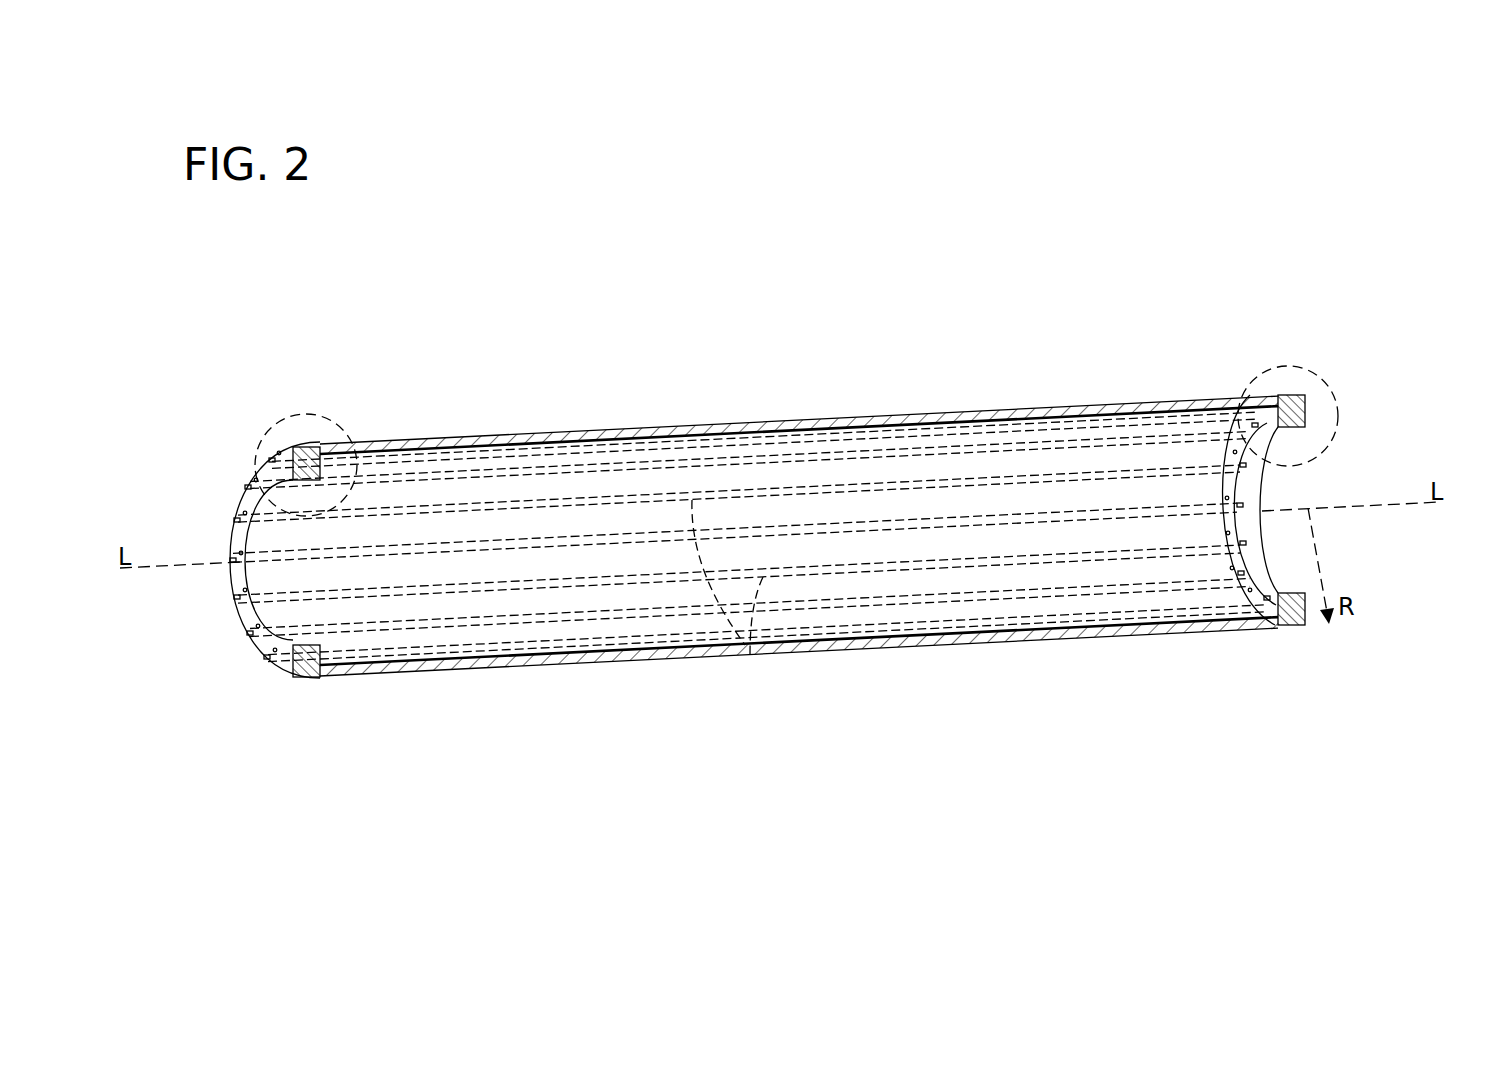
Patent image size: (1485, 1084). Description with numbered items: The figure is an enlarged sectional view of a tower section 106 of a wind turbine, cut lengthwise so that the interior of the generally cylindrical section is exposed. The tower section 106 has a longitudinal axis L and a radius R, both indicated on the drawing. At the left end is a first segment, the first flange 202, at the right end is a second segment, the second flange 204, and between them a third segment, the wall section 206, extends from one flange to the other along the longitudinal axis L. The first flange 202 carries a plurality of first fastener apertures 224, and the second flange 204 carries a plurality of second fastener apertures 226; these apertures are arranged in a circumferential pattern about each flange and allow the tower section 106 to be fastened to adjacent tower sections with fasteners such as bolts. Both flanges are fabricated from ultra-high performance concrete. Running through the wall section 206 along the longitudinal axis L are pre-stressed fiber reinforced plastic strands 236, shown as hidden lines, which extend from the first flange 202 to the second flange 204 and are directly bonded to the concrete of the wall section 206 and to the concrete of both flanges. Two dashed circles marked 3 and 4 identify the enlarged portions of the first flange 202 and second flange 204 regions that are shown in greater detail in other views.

The tower section 106 is at (783, 475).
The first flange 202 is at (228, 544).
The second flange 204 is at (1294, 484).
The wall section 206 is at (787, 414).
The first fastener apertures 224 is at (258, 627).
The second fastener apertures 226 is at (1225, 495).
The FRP strands 236 is at (750, 658).
The detail view FIG. 3 region 3 is at (335, 418).
The detail view FIG. 4 region 4 is at (1310, 372).